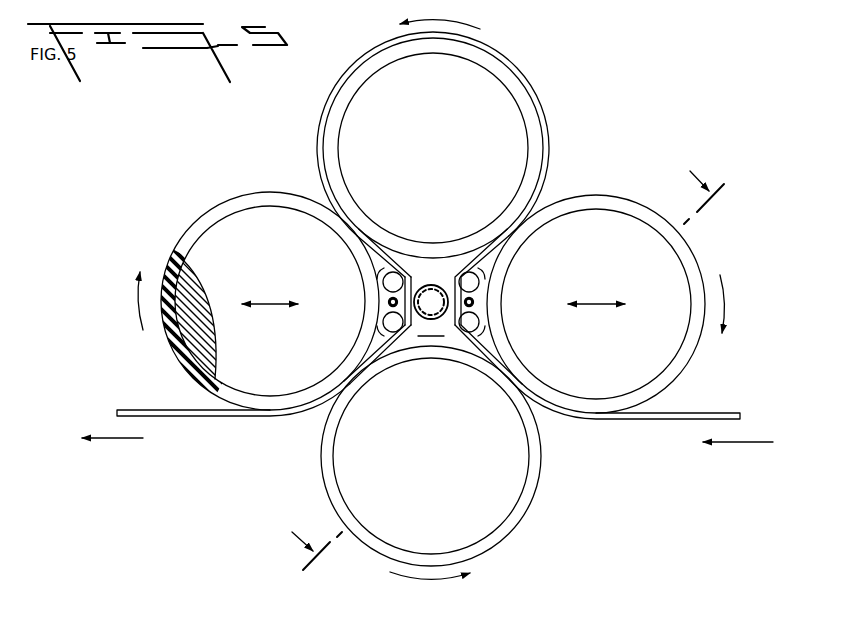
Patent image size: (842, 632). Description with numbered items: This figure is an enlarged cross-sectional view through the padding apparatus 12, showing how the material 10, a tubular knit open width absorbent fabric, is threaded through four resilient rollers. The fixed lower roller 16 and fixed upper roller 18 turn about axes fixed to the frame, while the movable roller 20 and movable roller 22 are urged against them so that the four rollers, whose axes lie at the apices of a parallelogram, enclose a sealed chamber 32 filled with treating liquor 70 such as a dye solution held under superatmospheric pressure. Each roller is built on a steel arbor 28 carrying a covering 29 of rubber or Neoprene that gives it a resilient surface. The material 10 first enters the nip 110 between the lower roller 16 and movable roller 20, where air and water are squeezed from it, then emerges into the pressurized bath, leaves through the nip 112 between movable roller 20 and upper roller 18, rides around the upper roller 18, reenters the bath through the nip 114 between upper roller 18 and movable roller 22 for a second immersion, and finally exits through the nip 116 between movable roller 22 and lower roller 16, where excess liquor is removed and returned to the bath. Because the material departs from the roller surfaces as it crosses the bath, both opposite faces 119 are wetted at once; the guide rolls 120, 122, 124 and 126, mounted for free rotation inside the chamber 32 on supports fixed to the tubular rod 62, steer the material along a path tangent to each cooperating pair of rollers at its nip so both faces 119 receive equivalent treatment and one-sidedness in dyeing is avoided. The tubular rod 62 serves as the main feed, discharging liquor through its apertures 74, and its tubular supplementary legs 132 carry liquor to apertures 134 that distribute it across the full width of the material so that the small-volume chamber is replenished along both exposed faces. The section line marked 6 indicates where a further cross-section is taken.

The material 10 is at (727, 413).
The apparatus 12 is at (505, 52).
The upper roller 18 is at (522, 98).
The movable roller 20 is at (620, 205).
The movable roller 22 is at (207, 214).
The steel arbor 28 is at (200, 297).
The covering 29 is at (190, 386).
The lower roller 16 is at (528, 497).
The chamber 32 is at (406, 343).
The tubular rod 62 is at (436, 285).
The treating liquor 70 is at (431, 327).
The apertures 74 is at (429, 286).
The nip 110 is at (507, 388).
The nip 112 is at (506, 210).
The nip 114 is at (368, 212).
The nip 116 is at (352, 383).
The opposite faces 119 is at (489, 252).
The guide roll 120 is at (478, 326).
The guide roll 122 is at (479, 282).
The guide roll 124 is at (384, 274).
The guide roll 126 is at (384, 324).
The supplementary legs 132 is at (389, 300).
The apertures 134 is at (390, 304).
The section line 6- 6 is at (508, 376).